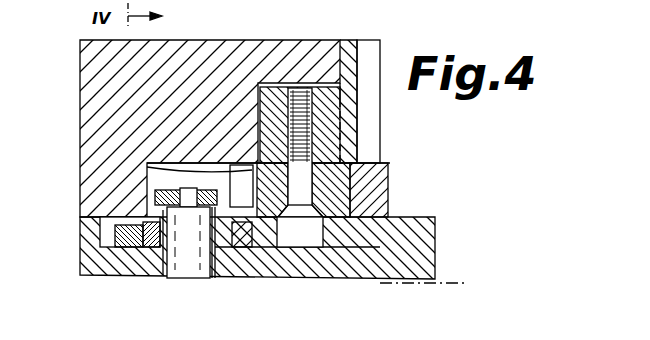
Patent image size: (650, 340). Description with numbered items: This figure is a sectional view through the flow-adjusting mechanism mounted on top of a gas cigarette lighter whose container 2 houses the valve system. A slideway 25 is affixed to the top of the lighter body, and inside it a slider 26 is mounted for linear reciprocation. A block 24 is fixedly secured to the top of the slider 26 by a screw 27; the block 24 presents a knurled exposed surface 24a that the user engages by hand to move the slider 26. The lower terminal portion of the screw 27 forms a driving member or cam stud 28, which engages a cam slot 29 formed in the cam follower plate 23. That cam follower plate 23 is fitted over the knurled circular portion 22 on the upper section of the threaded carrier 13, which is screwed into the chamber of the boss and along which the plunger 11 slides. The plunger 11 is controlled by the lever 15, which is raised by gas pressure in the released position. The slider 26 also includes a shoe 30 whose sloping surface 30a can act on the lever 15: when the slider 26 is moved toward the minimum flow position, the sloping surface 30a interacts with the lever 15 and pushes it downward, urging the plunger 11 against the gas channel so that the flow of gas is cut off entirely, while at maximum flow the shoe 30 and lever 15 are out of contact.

The container 2 is at (428, 256).
The plunger 11 is at (185, 268).
The threaded carrier 13 is at (147, 277).
The lever 15 is at (157, 193).
The knurled circular portion 22 is at (115, 237).
The cam follower plate 23 is at (115, 247).
The block 24 is at (270, 88).
The knurled exposed surface 24a is at (381, 120).
The slideway 25 is at (93, 83).
The slider 26 is at (385, 173).
The screw 27 is at (306, 92).
The cam stud 28 is at (303, 233).
The cam slot 29 is at (21, 5).
The shoe 30 is at (148, 163).
The sloping surface 30a is at (243, 222).